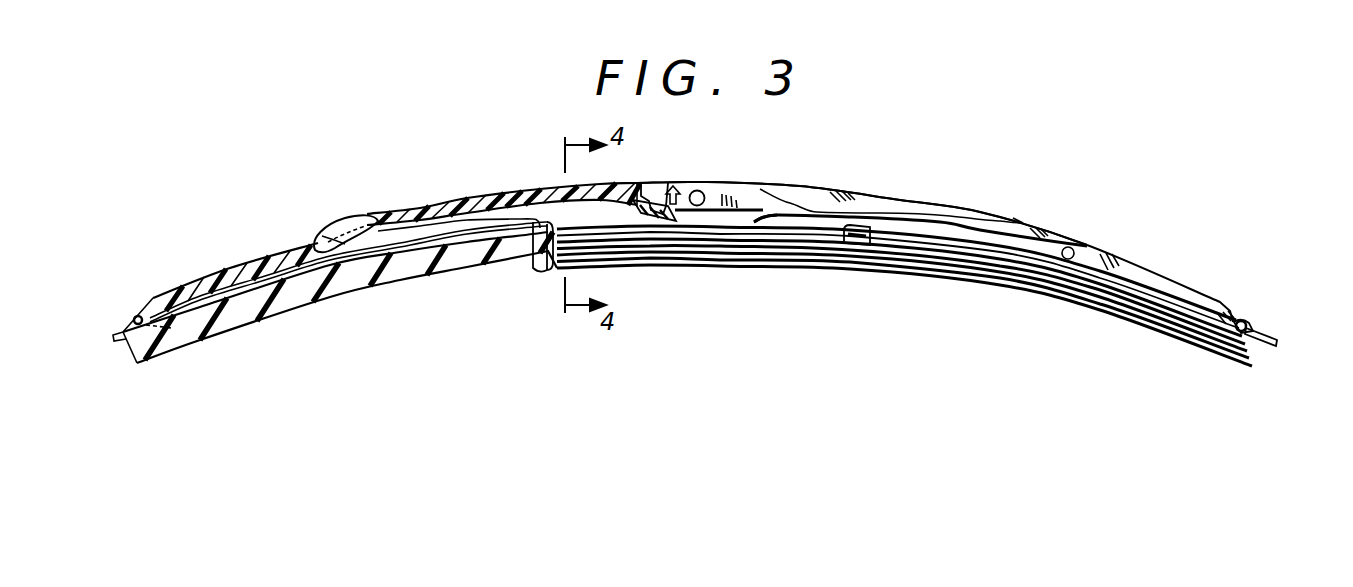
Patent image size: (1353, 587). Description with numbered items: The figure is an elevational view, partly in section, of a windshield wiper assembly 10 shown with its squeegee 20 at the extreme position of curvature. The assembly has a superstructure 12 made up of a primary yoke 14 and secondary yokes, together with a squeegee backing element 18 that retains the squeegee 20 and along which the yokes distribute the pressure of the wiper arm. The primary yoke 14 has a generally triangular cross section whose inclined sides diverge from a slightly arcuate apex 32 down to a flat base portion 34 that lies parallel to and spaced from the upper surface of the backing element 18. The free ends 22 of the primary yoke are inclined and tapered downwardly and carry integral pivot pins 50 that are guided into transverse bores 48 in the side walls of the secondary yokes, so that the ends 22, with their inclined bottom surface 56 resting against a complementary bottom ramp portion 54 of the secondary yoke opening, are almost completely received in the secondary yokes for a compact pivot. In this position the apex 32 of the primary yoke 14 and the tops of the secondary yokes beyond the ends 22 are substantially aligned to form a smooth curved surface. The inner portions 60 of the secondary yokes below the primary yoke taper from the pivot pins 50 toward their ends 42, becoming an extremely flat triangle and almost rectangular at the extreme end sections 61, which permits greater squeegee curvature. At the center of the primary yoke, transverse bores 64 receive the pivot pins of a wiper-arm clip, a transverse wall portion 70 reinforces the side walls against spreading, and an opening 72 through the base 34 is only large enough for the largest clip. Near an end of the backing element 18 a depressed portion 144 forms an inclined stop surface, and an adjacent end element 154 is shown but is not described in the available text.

The windshield wiper assembly 10 is at (853, 166).
The superstructure 12 is at (1182, 250).
The primary yoke 14 is at (866, 200).
The squeegee backing element 18 is at (1272, 338).
The squeegee 20 is at (176, 348).
The free ends of the primary yoke 22 is at (362, 217).
The arcuate apex 32 is at (486, 230).
The flat base portion 34 is at (820, 216).
The ends of the secondary yokes 42 is at (540, 242).
The transverse bores 48 is at (322, 238).
The pivot pins 50 is at (338, 262).
The bottom ramp portion 54 is at (374, 262).
The inclined bottom surface 56 is at (412, 224).
The inner portions of the secondary superstructures 60 is at (953, 233).
The extreme end sections 61 is at (518, 215).
The transverse bores 64 is at (700, 192).
The transverse wall portion 70 is at (660, 222).
The opening 72 is at (678, 219).
The depressed portion 144 is at (1252, 330).
The end cap 154 is at (136, 316).